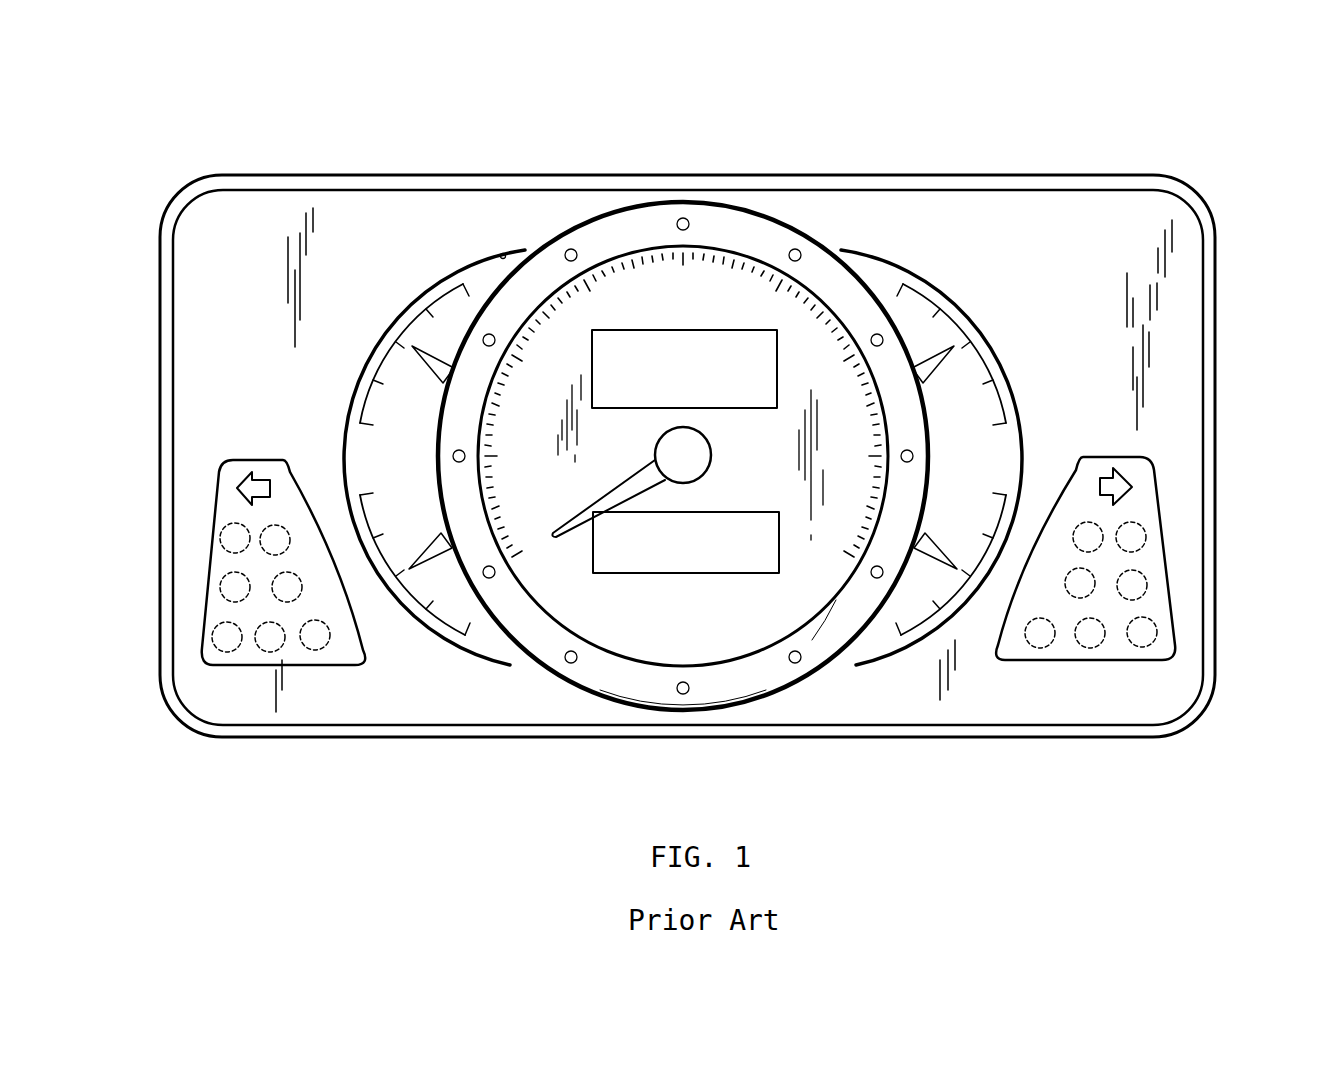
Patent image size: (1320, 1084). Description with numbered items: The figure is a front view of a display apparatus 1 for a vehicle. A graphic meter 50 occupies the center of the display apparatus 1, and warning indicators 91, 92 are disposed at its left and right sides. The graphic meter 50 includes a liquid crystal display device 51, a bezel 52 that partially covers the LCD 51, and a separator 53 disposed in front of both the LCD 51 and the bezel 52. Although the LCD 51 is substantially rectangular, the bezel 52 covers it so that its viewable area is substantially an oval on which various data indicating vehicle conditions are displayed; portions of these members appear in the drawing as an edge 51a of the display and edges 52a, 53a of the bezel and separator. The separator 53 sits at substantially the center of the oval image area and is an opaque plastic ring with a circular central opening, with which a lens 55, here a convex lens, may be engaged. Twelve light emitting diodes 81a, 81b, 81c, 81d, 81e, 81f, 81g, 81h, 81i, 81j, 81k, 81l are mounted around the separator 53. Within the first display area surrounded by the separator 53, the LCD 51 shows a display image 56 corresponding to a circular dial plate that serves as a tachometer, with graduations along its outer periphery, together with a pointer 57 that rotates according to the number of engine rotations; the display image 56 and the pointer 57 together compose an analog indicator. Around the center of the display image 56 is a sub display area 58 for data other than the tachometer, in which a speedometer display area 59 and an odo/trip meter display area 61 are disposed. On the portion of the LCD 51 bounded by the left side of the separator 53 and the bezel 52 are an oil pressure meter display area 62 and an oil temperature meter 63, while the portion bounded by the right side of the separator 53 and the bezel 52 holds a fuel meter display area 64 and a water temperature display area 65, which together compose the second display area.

The display apparatus 1 is at (728, 168).
The graphic meter 50 is at (421, 279).
The liquid crystal display (LCD) display device 51 is at (863, 252).
The right combination meter 51a is at (952, 300).
The bezel 52 is at (1056, 235).
The ring front edge 52a is at (503, 253).
The separator 53 is at (654, 690).
The bezel ring side portion 53a is at (826, 597).
The lens 55 is at (572, 366).
The display image 56 is at (668, 273).
The pointer 57 is at (570, 556).
The sub display area 58 is at (757, 372).
The speedometer display area 59 is at (700, 345).
The odo/trip meter display area 61 is at (734, 572).
The oil pressure meter display area 62 is at (410, 318).
The oil temperature meter 63 is at (410, 606).
The fuel meter display area 64 is at (980, 364).
The water temperature display area 65 is at (958, 610).
The light emitting diode 81a is at (683, 694).
The light emitting diode 81b is at (571, 663).
The light emitting diode 81c is at (489, 578).
The light emitting diode 81d is at (453, 456).
The light emitting diode 81e is at (489, 334).
The light emitting diode 81f is at (571, 249).
The light emitting diode 81g is at (683, 218).
The light emitting diode 81h is at (795, 249).
The light emitting diode 81i is at (877, 334).
The light emitting diode 81j is at (913, 456).
The light emitting diode 81k is at (877, 578).
The light emitting diode 81l is at (795, 663).
The warning indicator 91 is at (218, 563).
The warning indicator 92 is at (1148, 557).